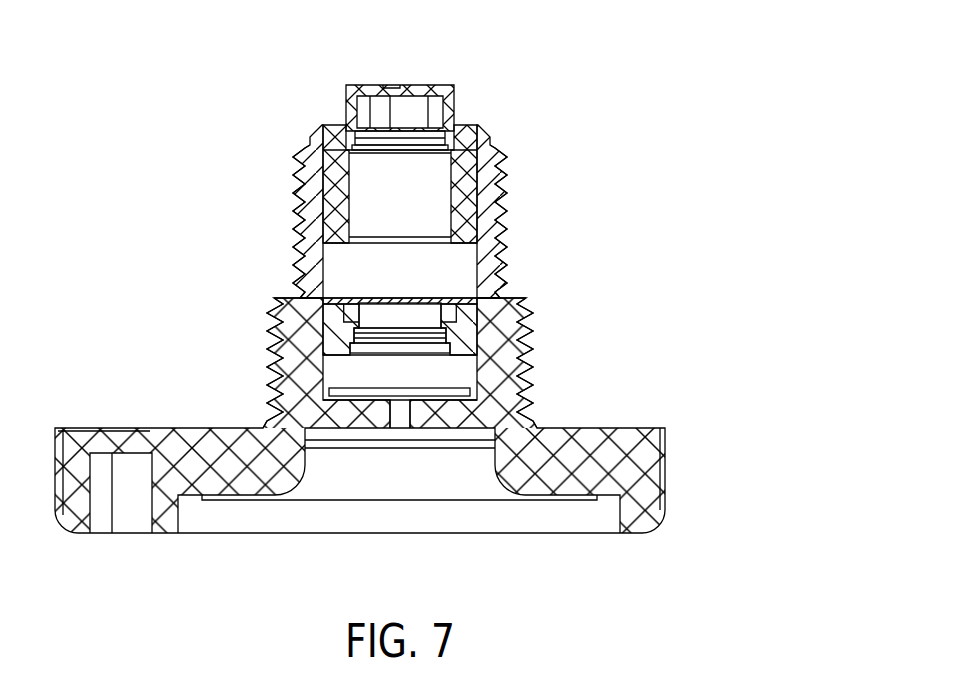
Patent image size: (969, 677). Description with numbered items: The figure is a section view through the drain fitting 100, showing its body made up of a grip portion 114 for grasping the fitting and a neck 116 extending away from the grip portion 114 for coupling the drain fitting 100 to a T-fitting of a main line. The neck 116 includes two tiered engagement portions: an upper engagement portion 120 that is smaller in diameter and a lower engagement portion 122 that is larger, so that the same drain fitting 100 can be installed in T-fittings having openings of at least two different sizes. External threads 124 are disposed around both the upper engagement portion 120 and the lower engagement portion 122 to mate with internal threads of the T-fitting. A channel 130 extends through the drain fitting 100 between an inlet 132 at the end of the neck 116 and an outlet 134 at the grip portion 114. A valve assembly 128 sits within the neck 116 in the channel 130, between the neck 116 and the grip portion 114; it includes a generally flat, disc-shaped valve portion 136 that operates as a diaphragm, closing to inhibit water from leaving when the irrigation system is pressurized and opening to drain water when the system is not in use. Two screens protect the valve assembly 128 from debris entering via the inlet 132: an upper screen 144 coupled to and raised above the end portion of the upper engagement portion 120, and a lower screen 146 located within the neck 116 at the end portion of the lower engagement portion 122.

The drain fitting 100 is at (419, 306).
The grip portion 114 is at (685, 462).
The neck 116 is at (382, 220).
The upper engagement portion 120 is at (405, 266).
The lower engagement portion 122 is at (251, 348).
The external threads 124 is at (493, 185).
The valve assembly 128 is at (387, 378).
The channel 130 is at (440, 298).
The inlet 132 is at (474, 138).
The outlet 134 is at (403, 431).
The valve portion 136 is at (481, 336).
The upper screen 144 is at (455, 100).
The lower screen 146 is at (497, 278).